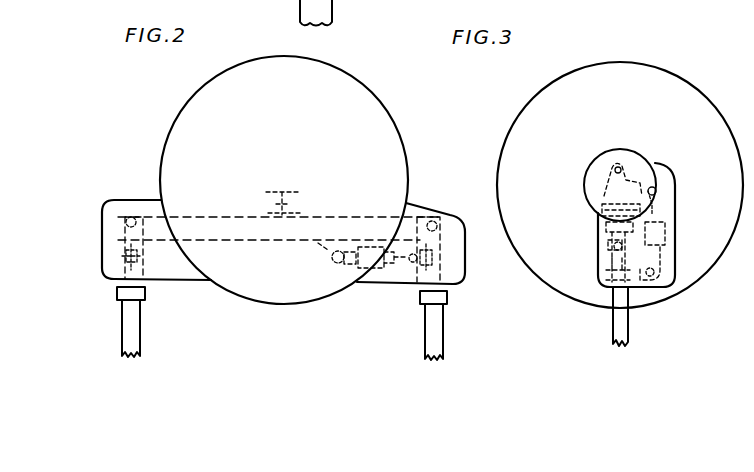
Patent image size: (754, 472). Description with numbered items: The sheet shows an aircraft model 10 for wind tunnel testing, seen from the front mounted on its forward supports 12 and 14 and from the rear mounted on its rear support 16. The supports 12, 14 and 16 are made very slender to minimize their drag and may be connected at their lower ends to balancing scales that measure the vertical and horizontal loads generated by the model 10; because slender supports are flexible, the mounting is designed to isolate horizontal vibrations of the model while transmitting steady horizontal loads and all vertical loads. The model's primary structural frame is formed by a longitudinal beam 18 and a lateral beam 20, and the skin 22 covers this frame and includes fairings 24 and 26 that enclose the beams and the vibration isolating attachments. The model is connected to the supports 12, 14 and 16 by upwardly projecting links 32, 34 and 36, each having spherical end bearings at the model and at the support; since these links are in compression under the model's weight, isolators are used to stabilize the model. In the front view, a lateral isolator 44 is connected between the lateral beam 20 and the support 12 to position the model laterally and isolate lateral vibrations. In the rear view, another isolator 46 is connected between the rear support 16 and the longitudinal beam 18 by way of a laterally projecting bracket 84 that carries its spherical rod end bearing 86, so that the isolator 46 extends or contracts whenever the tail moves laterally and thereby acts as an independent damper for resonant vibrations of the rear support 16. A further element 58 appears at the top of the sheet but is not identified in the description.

In FIG. 2, the aircraft model 10 is at (374, 76).
In FIG. 3, the aircraft model 10 is at (685, 57).
In FIG. 2, the forward support 12 is at (442, 332).
In FIG. 2, the forward support 14 is at (124, 340).
In FIG. 3, the rear support 16 is at (613, 327).
In FIG. 2, the longitudinal beam 18 is at (290, 190).
In FIG. 3, the longitudinal beam 18 is at (598, 205).
In FIG. 2, the lateral beam 20 is at (226, 216).
In FIG. 2, the skin 22 is at (203, 94).
In FIG. 3, the skin 22 is at (549, 94).
In FIG. 2, the fairing 24 is at (150, 199).
In FIG. 3, the fairing 26 is at (655, 176).
In FIG. 2, the link 32 is at (445, 246).
In FIG. 2, the link 34 is at (108, 212).
In FIG. 3, the link 36 is at (612, 246).
In FIG. 2, the lateral isolator 44 is at (368, 252).
In FIG. 3, the isolator 46 is at (660, 235).
In FIG. 2, the cover 58 is at (340, 13).
In FIG. 3, the laterally projecting bracket 84 is at (638, 182).
In FIG. 3, the spherical rod end bearing 86 is at (668, 190).